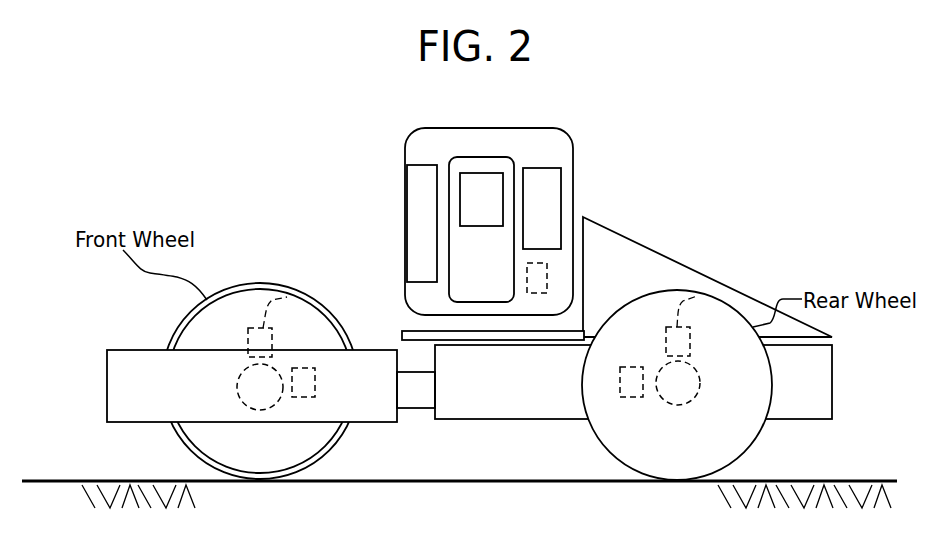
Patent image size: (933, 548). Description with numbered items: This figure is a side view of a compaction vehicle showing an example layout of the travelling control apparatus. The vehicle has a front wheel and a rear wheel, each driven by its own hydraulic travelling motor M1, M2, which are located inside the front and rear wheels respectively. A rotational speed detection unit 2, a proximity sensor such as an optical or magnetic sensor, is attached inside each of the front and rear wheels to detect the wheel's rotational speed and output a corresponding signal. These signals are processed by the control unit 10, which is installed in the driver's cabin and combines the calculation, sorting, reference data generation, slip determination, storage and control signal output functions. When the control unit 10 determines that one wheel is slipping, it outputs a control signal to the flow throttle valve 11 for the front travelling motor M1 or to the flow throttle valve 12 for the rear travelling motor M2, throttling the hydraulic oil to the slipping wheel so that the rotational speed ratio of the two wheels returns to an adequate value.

The rotational speed detection unit 2 is at (302, 296).
The control unit 10 is at (547, 270).
The flow throttle valve 11 is at (315, 375).
The flow throttle valve 12 is at (620, 387).
The travelling motor M1 is at (240, 397).
The travelling motor M2 is at (700, 410).